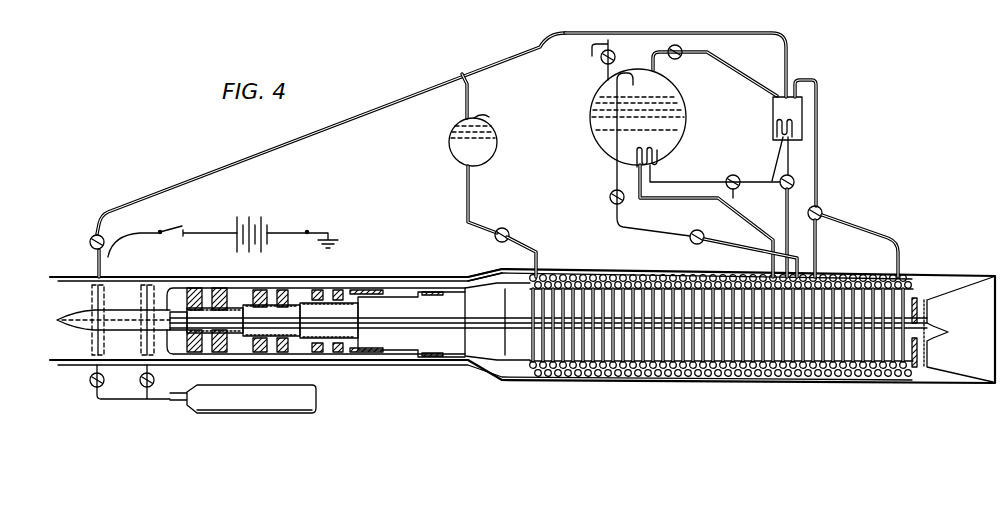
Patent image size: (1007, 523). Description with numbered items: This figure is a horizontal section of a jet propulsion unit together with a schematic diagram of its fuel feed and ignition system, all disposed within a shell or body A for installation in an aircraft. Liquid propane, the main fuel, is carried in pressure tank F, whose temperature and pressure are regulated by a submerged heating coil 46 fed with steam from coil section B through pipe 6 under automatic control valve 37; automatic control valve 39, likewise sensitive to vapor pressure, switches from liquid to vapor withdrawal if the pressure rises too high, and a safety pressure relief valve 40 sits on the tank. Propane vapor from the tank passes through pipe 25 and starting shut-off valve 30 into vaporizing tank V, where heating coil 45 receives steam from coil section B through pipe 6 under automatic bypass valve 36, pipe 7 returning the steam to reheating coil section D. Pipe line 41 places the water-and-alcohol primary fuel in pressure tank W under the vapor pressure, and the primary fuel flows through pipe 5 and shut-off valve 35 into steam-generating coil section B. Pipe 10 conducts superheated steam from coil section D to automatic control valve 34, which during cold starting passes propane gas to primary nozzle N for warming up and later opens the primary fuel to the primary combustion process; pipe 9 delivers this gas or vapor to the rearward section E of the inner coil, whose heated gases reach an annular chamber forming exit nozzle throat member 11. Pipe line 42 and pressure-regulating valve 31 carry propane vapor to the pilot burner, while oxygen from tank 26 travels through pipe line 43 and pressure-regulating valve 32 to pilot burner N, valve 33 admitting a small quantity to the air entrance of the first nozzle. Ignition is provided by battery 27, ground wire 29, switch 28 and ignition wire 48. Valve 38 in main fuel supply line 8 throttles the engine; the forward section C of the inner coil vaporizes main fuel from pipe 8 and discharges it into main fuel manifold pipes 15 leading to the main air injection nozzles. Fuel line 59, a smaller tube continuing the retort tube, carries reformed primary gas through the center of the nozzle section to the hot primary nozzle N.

The pipe 5 is at (538, 251).
The pipe 6 is at (747, 220).
The pipe 7 is at (817, 178).
The main fuel supply line 8 is at (712, 241).
The primary fuel inlet pipe 9 is at (817, 243).
The pipe 10 is at (883, 235).
The exit nozzle throat member 11 is at (935, 297).
The main fuel supply manifold pipes 15 is at (355, 363).
The pipe 25 is at (788, 63).
The oxygen tank 26 is at (254, 411).
The battery 27 is at (243, 216).
The switch 28 is at (162, 231).
The ground wire 29 is at (328, 234).
The starting shut-off valve 30 is at (679, 58).
The pressure-regulating valve 31 is at (95, 236).
The pressure-regulating valve 32 is at (90, 384).
The valve 33 is at (140, 384).
The automatic control valve 34 is at (821, 212).
The shut-off valve 35 is at (508, 237).
The automatic bypass valve 36 is at (784, 186).
The automatic control valve 37 is at (730, 177).
The valve 38 is at (694, 232).
The automatic control valve 39 is at (611, 196).
The safety pressure relief valve 40 is at (600, 58).
The pipe line 41 is at (473, 92).
The pipe line 42 is at (96, 258).
The oxygen pipe line 43 is at (122, 400).
The heating coil 45 is at (776, 130).
The main fuel tank heating coil 46 is at (658, 148).
The ignition wire 48 is at (128, 242).
The fuel line 59 is at (438, 330).
The shell or body A is at (488, 272).
The coil section B is at (575, 381).
The forward section of inner coil C is at (668, 381).
The coil section D is at (833, 381).
The rearward section of inner coil E is at (866, 381).
The main fuel pressure tank F is at (638, 117).
The primary nozzle N is at (70, 330).
The vaporizing tank V is at (800, 115).
The primary fuel pressure tank W is at (473, 140).